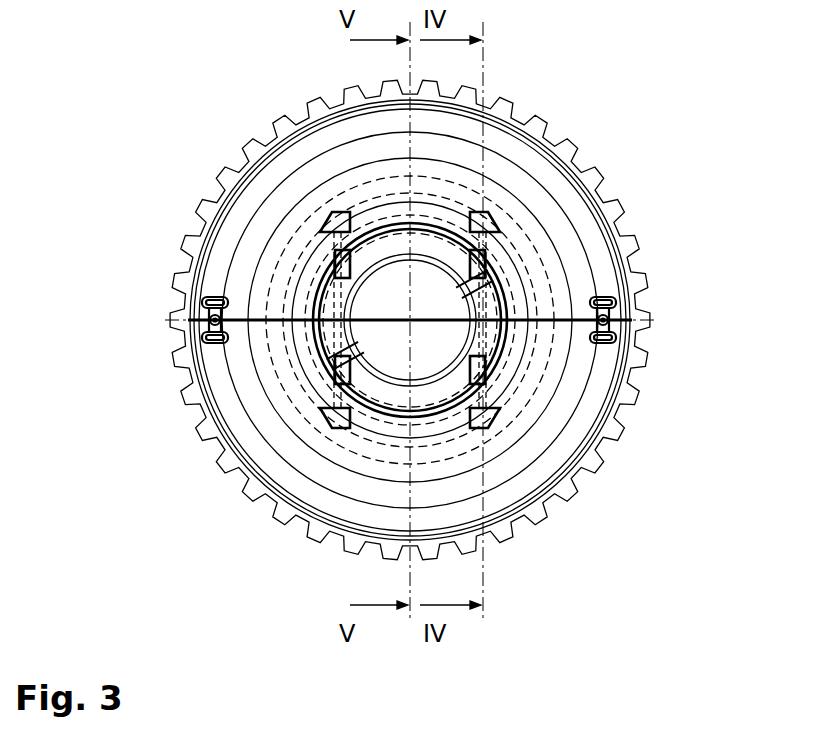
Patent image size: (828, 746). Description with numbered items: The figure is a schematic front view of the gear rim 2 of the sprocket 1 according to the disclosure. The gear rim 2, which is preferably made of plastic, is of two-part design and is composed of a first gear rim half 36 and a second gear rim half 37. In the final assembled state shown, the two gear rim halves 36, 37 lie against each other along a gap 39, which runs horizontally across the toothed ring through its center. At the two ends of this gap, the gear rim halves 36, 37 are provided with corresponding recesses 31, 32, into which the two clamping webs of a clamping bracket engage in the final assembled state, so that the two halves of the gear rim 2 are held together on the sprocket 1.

The sprocket 1 is at (450, 319).
The gear rim 2 is at (262, 408).
The recess 31 is at (612, 299).
The recess 32 is at (612, 342).
The first gear rim half 36 is at (540, 165).
The second gear rim half 37 is at (280, 477).
The gap 39 is at (551, 341).